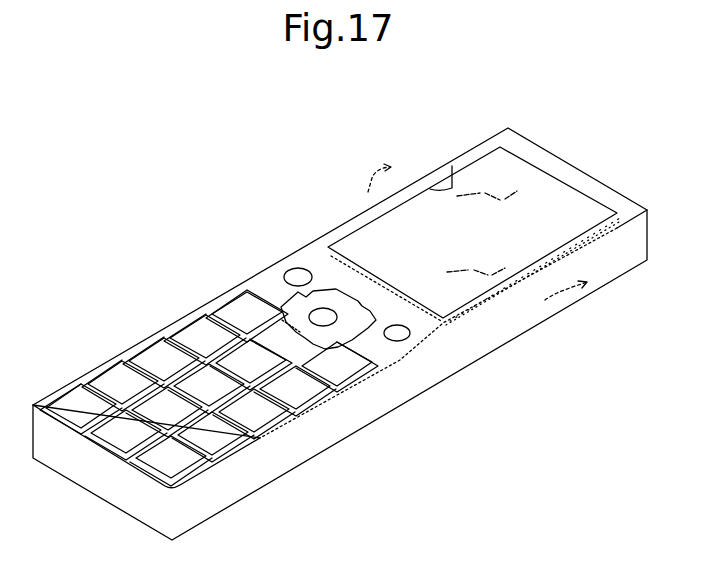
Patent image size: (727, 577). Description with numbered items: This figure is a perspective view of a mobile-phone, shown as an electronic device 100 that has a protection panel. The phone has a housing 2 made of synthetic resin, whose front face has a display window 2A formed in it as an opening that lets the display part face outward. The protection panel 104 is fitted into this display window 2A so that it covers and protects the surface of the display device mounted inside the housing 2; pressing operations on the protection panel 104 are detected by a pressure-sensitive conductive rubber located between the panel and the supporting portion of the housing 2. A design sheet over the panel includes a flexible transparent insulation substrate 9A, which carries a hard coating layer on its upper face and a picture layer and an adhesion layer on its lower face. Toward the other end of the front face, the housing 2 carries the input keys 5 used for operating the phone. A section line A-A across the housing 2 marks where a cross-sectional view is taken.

The portable terminal device 100 is at (236, 224).
The housing 2 is at (444, 383).
The display window 2A is at (452, 166).
The input keys 5 is at (144, 356).
The flexible transparent insulation substrate 9A is at (516, 170).
The protection panel 104 is at (558, 205).